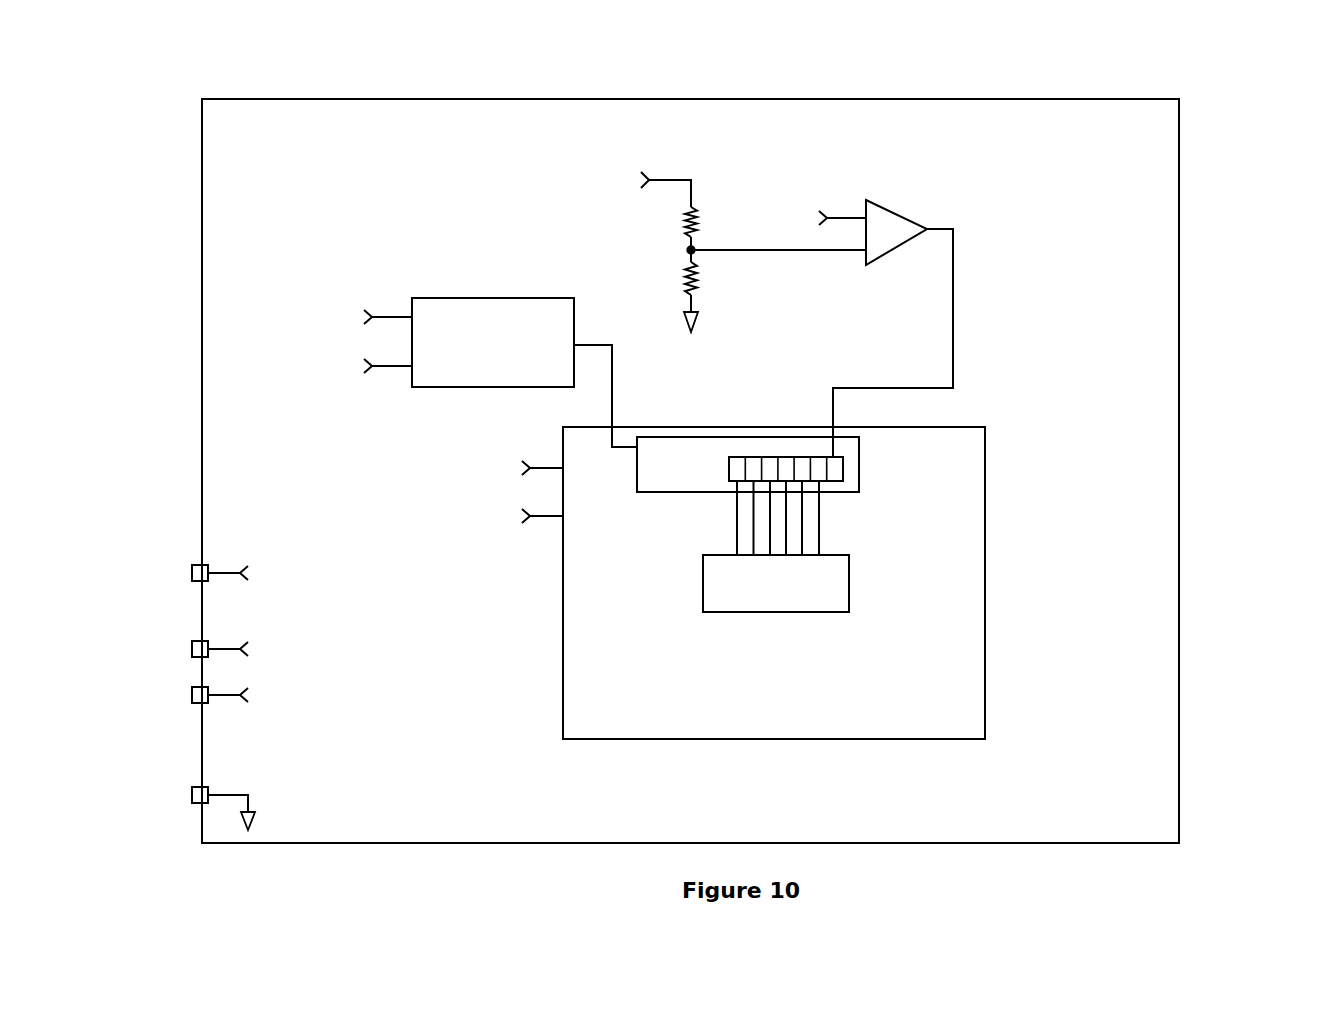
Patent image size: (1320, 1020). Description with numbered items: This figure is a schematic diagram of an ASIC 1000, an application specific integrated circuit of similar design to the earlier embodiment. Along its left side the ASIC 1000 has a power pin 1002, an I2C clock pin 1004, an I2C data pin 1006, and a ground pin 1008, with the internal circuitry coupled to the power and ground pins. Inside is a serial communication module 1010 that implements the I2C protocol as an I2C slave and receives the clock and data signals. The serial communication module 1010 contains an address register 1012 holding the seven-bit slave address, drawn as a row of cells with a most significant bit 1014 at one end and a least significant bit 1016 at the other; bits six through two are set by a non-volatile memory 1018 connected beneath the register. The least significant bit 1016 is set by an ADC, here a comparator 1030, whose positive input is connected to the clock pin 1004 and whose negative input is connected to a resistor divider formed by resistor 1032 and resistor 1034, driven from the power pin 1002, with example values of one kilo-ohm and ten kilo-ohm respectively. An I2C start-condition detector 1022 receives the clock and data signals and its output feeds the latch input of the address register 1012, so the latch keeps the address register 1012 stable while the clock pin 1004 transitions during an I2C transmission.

The ASIC 1000 is at (1207, 134).
The power pin 1002 is at (196, 565).
The I2C clock pin 1004 is at (196, 641).
The I2C data pin 1006 is at (193, 689).
The ground pin 1008 is at (195, 787).
The serial communication module 1010 is at (831, 739).
The address register 1012 is at (859, 480).
The most significant bit 1014 is at (730, 476).
The least significant bit 1016 is at (835, 481).
The non-volatile memory 1018 is at (849, 581).
The I2C start-condition detector 1022 is at (431, 298).
The comparator 1030 is at (894, 213).
The resistor 1032 is at (684, 231).
The resistor 1034 is at (685, 295).